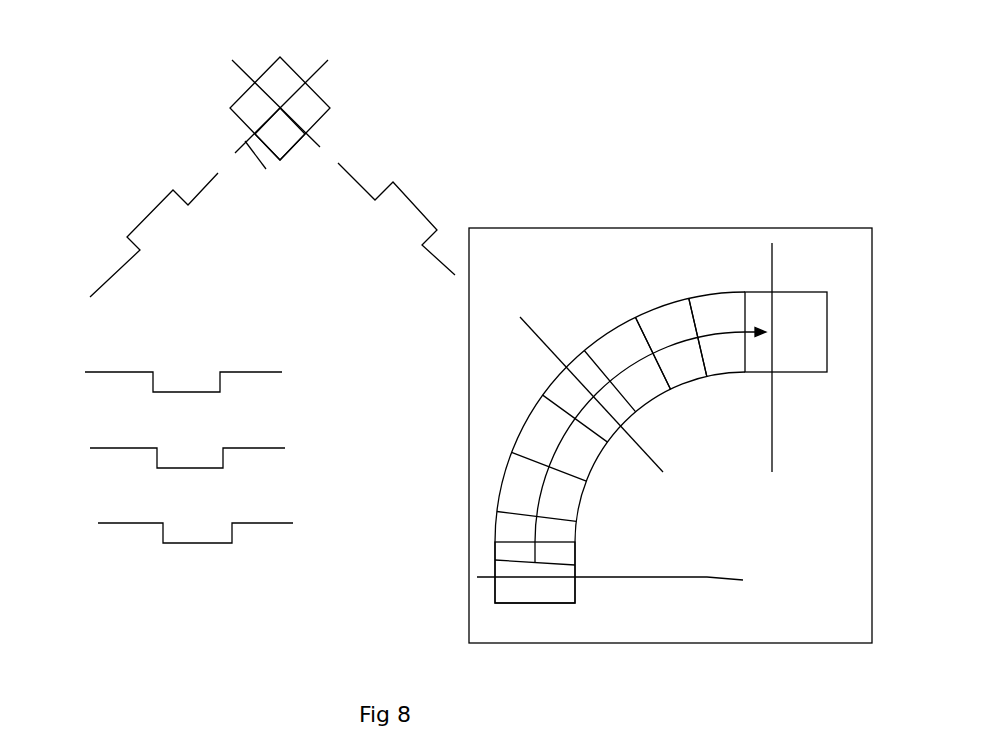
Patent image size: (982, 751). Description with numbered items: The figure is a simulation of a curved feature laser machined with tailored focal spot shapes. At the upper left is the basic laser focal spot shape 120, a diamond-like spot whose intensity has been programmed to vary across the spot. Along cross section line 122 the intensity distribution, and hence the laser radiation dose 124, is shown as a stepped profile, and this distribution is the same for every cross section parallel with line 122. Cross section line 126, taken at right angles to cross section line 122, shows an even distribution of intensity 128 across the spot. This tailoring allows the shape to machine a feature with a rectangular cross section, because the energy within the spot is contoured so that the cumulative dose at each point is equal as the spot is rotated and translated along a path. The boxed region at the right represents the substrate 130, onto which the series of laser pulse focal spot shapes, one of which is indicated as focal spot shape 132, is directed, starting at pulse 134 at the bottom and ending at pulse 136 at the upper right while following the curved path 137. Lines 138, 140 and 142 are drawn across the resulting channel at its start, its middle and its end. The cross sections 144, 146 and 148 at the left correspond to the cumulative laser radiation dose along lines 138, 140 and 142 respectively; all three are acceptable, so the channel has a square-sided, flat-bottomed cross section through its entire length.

The laser focal spot shape 120 is at (322, 98).
The cross section line 122 is at (318, 137).
The laser radiation dose 124 is at (417, 203).
The cross section line 126 is at (271, 175).
The even distribution of intensity 128 is at (200, 192).
The substrate 130 is at (468, 548).
The laser pulse focal spot shape 132 is at (603, 470).
The starting pulse 134 is at (575, 588).
The ending pulse 136 is at (805, 372).
The path 137 is at (682, 343).
The line 138 is at (638, 584).
The line 140 is at (576, 380).
The line 142 is at (772, 271).
The cross section 144 is at (231, 524).
The cross section 146 is at (225, 449).
The cross section 148 is at (230, 379).